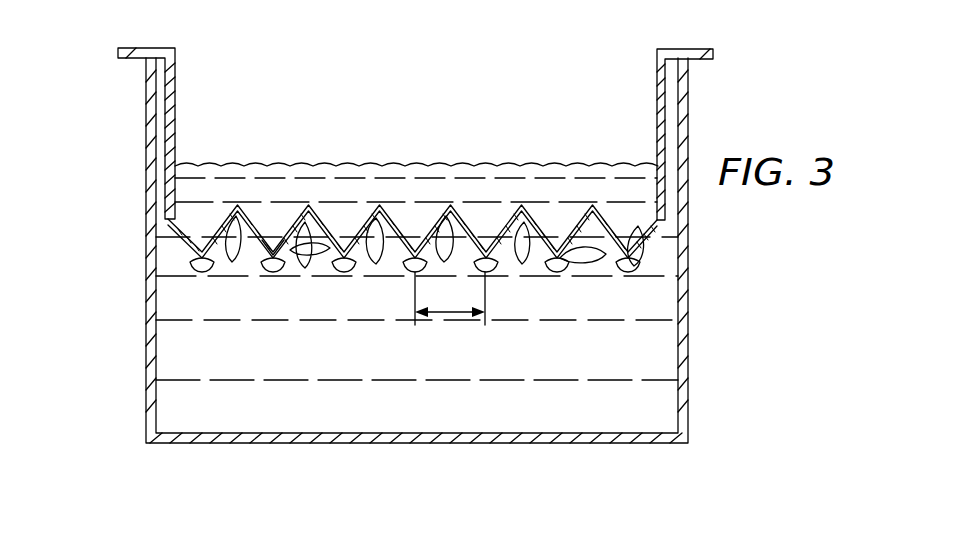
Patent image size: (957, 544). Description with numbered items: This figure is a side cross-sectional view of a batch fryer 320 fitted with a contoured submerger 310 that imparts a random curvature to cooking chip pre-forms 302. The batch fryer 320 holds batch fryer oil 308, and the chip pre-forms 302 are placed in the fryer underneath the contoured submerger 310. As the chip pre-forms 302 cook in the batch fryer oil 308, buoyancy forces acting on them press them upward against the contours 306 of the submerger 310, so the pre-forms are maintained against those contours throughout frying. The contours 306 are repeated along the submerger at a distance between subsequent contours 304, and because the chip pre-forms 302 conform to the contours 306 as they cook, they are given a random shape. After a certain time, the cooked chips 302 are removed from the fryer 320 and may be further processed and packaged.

The cooking chip pre-form 302 is at (197, 265).
The distance between subsequent contours 304 is at (448, 314).
The contours of the submerger 306 is at (266, 270).
The batch fryer oil 308 is at (417, 187).
The contoured submerger 310 is at (283, 218).
The batch fryer 320 is at (145, 296).